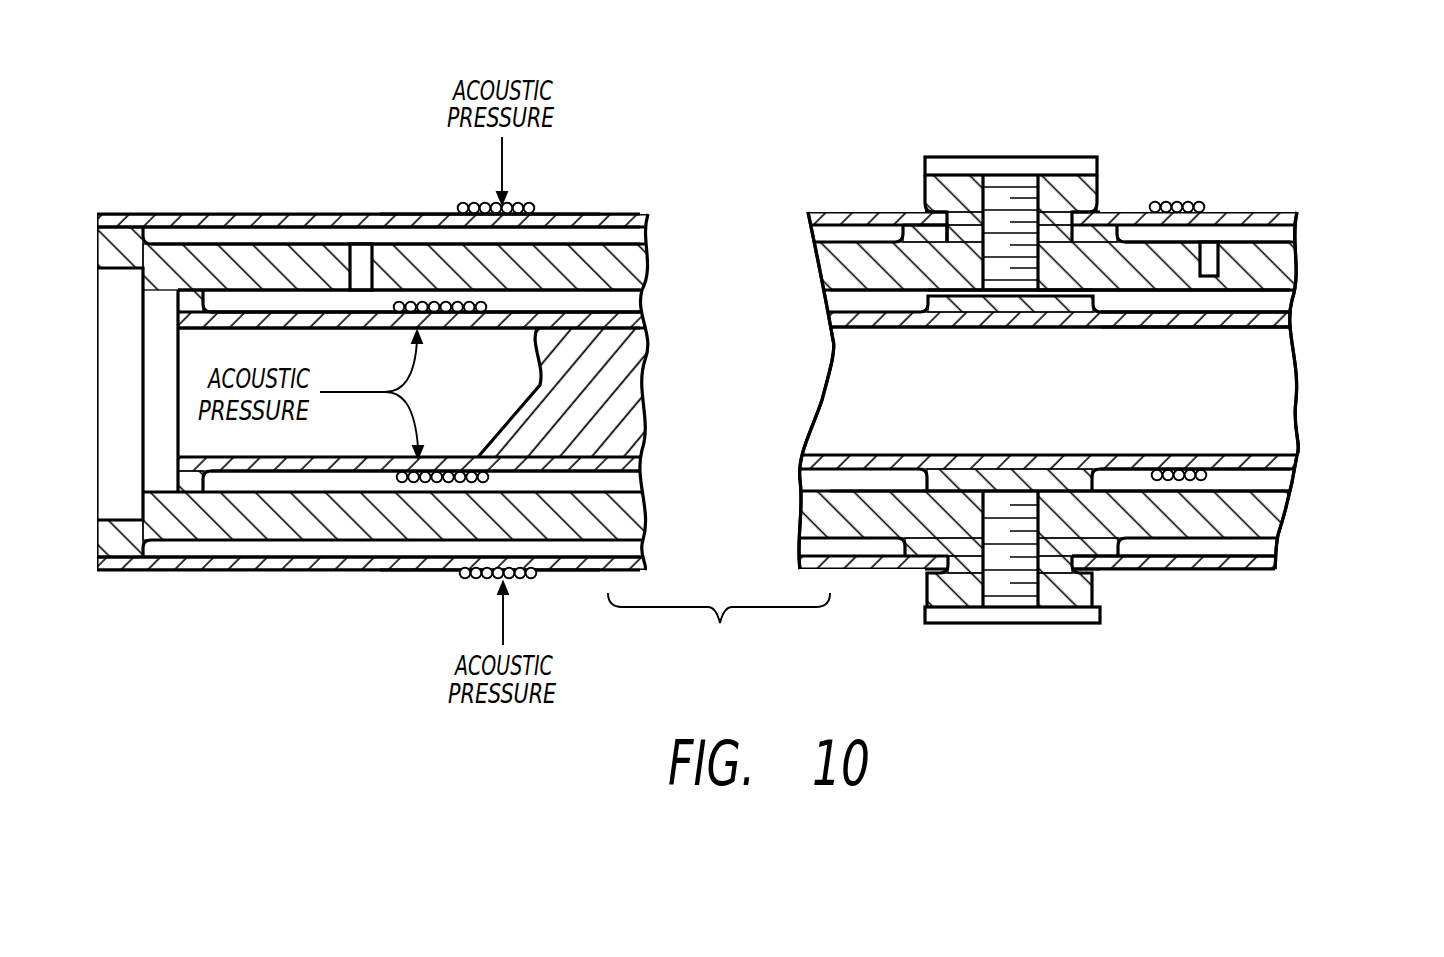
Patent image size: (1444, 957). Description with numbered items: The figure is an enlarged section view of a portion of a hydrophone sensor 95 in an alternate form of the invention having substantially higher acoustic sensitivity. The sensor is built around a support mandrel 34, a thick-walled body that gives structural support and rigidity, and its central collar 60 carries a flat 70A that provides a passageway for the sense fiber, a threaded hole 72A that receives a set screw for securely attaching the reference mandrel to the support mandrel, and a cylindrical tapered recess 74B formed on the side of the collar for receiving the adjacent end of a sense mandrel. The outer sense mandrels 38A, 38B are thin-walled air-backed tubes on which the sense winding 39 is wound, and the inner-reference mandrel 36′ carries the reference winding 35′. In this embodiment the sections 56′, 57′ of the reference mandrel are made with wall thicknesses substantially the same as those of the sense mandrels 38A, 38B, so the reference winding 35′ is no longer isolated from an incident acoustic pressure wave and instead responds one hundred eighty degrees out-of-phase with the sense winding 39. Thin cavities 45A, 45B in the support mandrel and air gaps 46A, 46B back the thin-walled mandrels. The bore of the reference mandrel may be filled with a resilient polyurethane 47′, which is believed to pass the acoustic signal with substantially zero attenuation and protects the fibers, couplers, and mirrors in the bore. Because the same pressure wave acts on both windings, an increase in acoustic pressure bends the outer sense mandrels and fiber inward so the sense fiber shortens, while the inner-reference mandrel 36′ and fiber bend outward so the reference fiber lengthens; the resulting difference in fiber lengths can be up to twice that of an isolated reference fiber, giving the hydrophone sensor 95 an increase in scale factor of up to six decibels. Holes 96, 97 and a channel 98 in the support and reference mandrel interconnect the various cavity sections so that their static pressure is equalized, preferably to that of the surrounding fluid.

The support mandrel 34 is at (1310, 276).
The reference winding 35′ is at (464, 607).
The inner-reference mandrel 36′ is at (735, 221).
The sense mandrel 38A is at (1291, 212).
The sense mandrel 38B is at (288, 214).
The sense winding 39 is at (532, 199).
The cavity 45A is at (1258, 547).
The cavity 45B is at (168, 224).
The air gap 46A is at (1286, 302).
The air gap 46B is at (219, 302).
The polyurethane fill 47′ is at (733, 367).
The section of reference mandrel 56′ is at (1239, 365).
The section of reference mandrel 57′ is at (487, 362).
The central collar 60 is at (1073, 160).
The flat 70A is at (947, 165).
The threaded hole 72A is at (1003, 165).
The tapered recess 74B is at (918, 200).
The hydrophone sensor 95 is at (1186, 106).
The hole 96 is at (1216, 270).
The hole 97 is at (352, 276).
The channel 98 is at (957, 293).